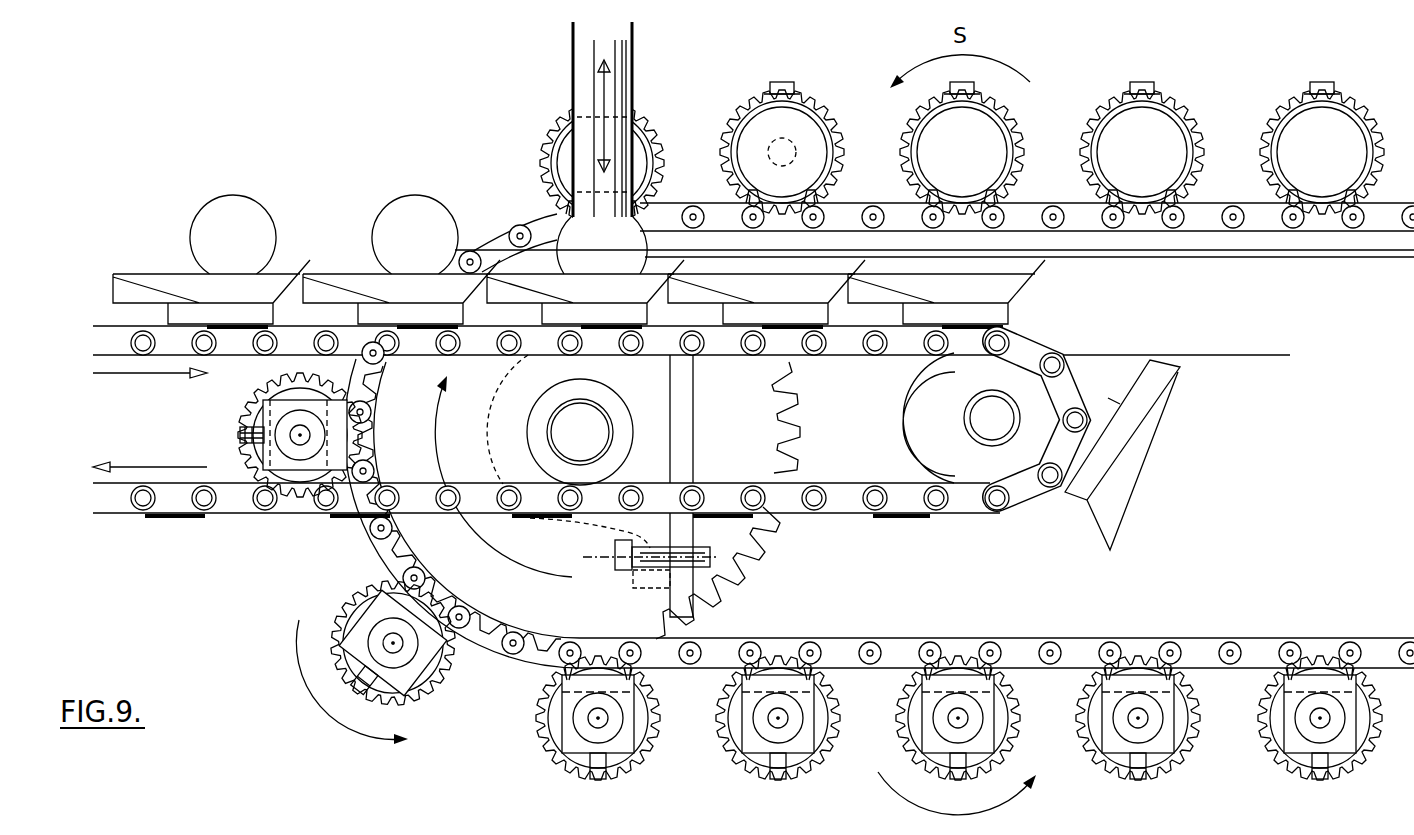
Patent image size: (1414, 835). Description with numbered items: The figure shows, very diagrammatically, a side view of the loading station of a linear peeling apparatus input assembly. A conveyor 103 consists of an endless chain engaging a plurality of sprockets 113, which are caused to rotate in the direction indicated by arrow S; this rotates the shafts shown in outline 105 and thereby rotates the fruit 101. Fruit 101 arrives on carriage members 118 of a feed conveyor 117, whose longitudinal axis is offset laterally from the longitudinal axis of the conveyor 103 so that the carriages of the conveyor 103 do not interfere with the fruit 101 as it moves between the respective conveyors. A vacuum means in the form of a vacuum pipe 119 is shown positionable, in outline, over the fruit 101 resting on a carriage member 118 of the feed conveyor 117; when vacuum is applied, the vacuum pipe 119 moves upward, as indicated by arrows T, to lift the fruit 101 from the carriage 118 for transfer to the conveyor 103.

The fruit 101 is at (255, 238).
The conveyor 103 is at (1202, 223).
The shafts 105 is at (790, 147).
The sprockets 113 is at (1188, 118).
The feed conveyor 117 is at (238, 507).
The carriage members 118 is at (148, 280).
The vacuum pipe 119 is at (622, 53).